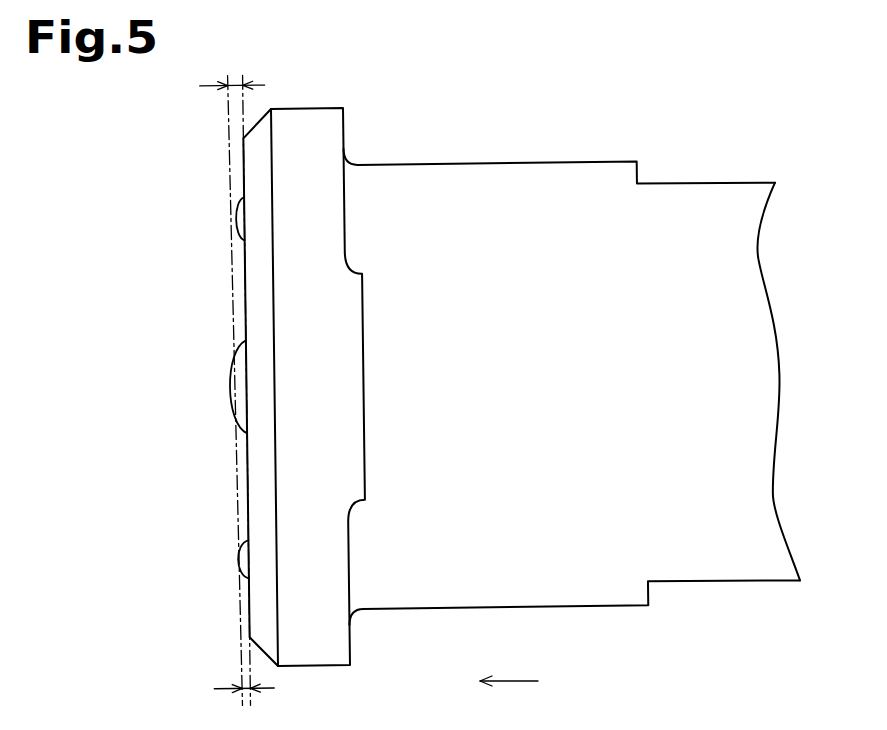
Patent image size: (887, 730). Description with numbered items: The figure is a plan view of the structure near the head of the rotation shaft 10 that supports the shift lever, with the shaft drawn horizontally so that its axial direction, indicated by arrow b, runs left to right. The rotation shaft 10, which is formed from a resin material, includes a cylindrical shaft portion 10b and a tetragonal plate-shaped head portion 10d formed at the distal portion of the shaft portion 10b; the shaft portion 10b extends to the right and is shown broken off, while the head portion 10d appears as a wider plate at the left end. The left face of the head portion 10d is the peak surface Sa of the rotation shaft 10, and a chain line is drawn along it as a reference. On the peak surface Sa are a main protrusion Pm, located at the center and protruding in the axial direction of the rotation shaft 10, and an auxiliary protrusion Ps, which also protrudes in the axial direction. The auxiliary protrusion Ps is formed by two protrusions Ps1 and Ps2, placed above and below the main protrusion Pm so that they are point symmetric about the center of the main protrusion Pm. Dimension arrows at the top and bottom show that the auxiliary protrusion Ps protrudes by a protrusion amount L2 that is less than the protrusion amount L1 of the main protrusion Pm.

The rotation shaft 10 is at (521, 352).
The head portion 10d is at (303, 104).
The shaft portion 10b is at (515, 162).
The peak surface Sa is at (245, 480).
The auxiliary protrusion Ps is at (168, 387).
The protrusion Ps1 is at (236, 218).
The protrusion Ps2 is at (239, 551).
The main protrusion Pm is at (231, 387).
The protrusion amount L1 is at (225, 71).
The protrusion amount L2 is at (236, 674).
The arrow b is at (519, 680).